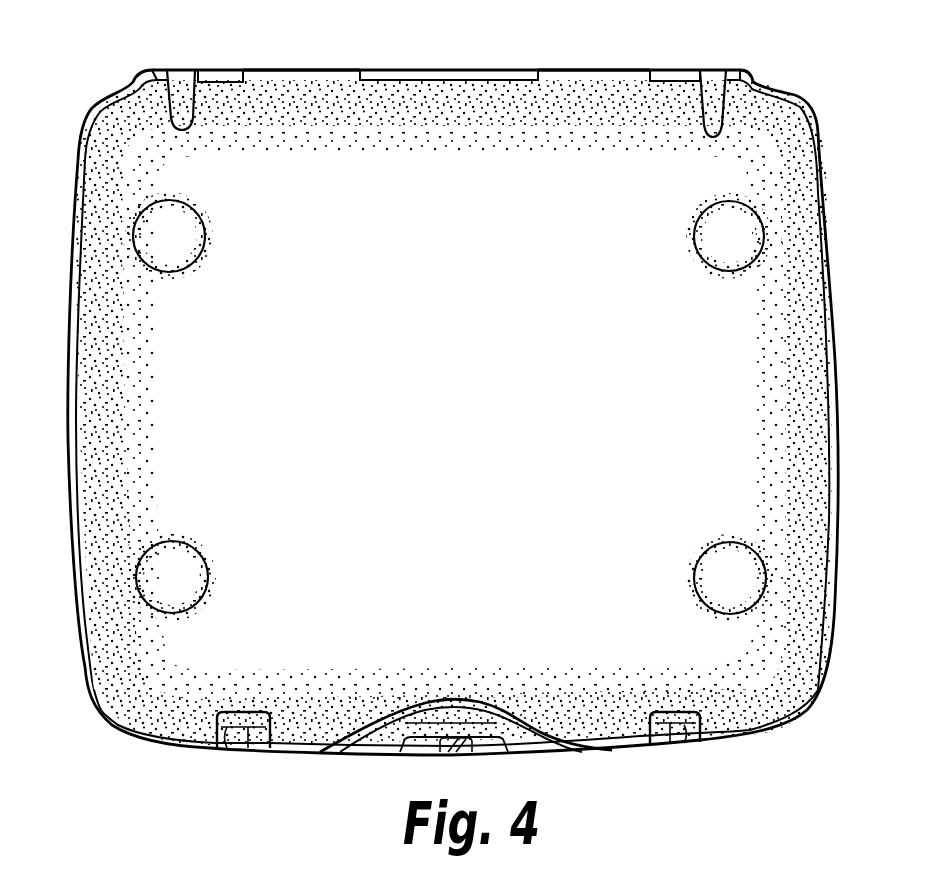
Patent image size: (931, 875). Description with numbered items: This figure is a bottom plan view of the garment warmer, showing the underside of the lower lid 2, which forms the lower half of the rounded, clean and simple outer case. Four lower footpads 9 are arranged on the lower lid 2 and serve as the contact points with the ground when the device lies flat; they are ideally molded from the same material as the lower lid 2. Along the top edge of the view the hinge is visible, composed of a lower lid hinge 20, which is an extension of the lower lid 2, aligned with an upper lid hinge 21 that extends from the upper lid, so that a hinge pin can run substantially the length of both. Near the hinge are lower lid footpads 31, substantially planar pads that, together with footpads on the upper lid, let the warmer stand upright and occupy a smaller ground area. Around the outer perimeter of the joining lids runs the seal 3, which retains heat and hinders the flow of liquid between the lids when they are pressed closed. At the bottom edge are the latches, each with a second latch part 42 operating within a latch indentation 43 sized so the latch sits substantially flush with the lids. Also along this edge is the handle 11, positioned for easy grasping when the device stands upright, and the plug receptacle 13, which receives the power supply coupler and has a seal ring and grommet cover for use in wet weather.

The lower lid 2 is at (142, 157).
The seal 3 is at (68, 370).
The lower footpads 9 is at (148, 228).
The handle 11 is at (353, 757).
The plug receptacle 13 is at (445, 757).
The lower lid hinge 20 is at (305, 70).
The upper lid hinge 21 is at (222, 69).
The lower lid footpads 31 is at (178, 90).
The second latch part 42 is at (247, 750).
The latch indentation 43 is at (223, 750).